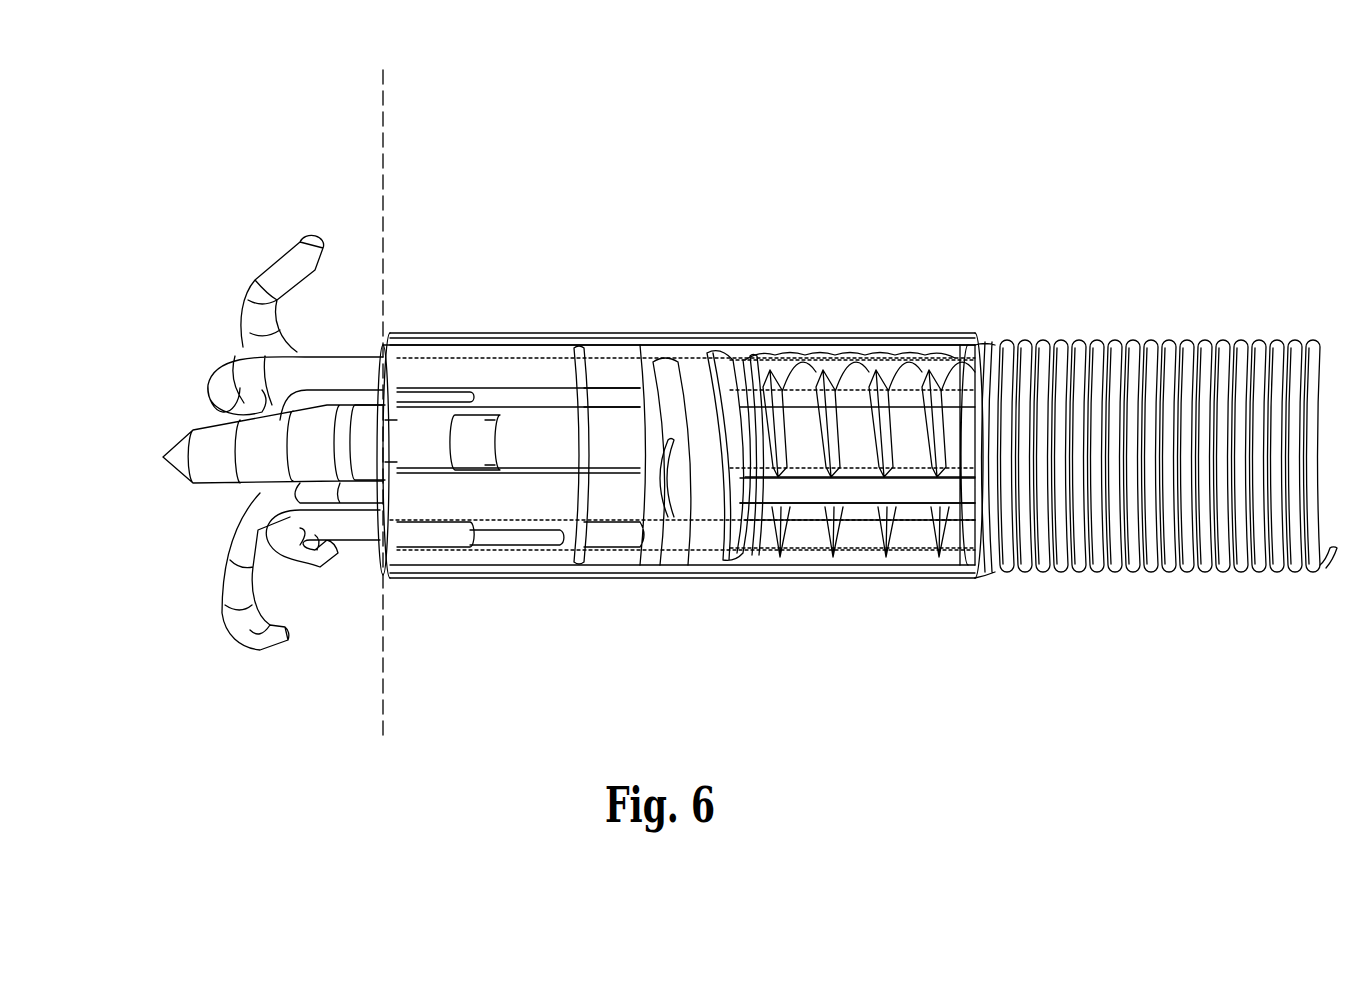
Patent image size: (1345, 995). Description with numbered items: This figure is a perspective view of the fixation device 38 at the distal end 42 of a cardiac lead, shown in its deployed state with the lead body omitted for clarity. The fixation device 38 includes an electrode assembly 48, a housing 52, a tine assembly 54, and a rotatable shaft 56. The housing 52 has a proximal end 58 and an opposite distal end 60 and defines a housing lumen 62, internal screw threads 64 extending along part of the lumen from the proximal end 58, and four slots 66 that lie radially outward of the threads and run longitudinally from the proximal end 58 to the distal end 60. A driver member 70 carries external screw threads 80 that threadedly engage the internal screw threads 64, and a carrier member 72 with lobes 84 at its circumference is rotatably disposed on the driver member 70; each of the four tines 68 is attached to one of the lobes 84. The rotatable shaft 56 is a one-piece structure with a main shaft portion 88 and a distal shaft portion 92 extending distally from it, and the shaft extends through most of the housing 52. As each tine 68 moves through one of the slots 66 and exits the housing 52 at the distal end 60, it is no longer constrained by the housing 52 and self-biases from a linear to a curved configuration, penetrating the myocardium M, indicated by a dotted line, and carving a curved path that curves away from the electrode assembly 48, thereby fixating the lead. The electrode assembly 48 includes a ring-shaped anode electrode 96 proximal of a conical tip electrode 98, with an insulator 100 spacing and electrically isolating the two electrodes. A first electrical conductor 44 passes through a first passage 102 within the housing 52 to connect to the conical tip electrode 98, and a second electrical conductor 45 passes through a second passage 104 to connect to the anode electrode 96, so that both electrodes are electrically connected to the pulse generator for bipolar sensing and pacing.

The myocardium M is at (386, 80).
The fixation device 38 is at (645, 333).
The distal end 42 is at (980, 152).
The first electrical conductor 44 is at (1030, 582).
The second electrical conductor 45 is at (1040, 333).
The electrode assembly 48 is at (206, 422).
The housing 52 is at (718, 580).
The tine assembly 54 is at (592, 333).
The rotatable shaft 56 is at (862, 560).
The proximal end 58 is at (950, 576).
The distal end 60 is at (380, 580).
The housing lumen 62 is at (835, 333).
The internal screw threads 64 is at (940, 333).
The slot 66 is at (430, 333).
The tine 68 is at (286, 245).
The driver member 70 is at (710, 333).
The carrier member 72 is at (607, 580).
The external screw threads 80 is at (665, 576).
The lobe 84 is at (610, 333).
The main shaft portion 88 is at (830, 570).
The distal shaft portion 92 is at (445, 333).
The anode electrode 96 is at (352, 335).
The conical tip electrode 98 is at (175, 452).
The insulator 100 is at (270, 470).
The first passage 102 is at (522, 572).
The second passage 104 is at (740, 333).